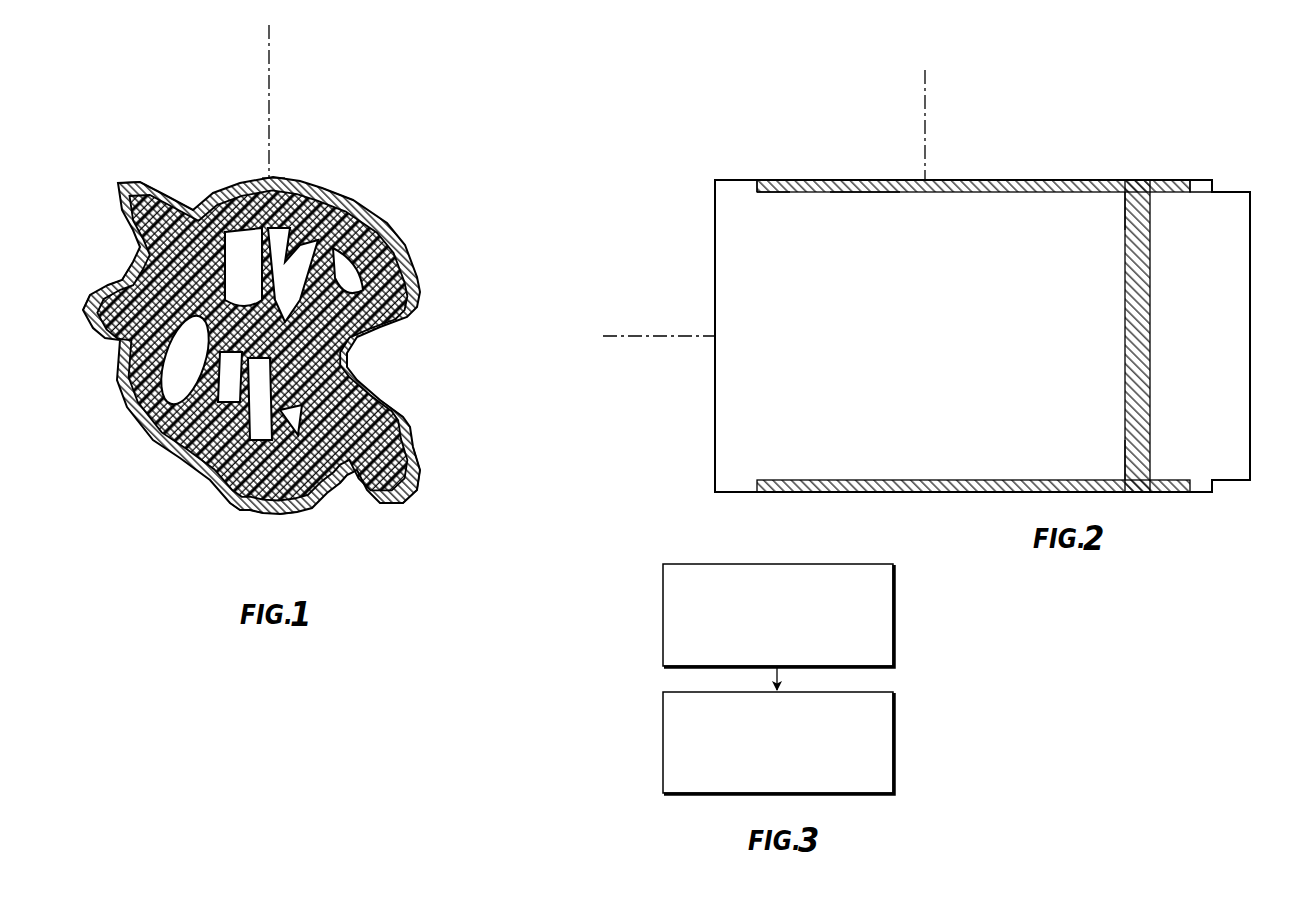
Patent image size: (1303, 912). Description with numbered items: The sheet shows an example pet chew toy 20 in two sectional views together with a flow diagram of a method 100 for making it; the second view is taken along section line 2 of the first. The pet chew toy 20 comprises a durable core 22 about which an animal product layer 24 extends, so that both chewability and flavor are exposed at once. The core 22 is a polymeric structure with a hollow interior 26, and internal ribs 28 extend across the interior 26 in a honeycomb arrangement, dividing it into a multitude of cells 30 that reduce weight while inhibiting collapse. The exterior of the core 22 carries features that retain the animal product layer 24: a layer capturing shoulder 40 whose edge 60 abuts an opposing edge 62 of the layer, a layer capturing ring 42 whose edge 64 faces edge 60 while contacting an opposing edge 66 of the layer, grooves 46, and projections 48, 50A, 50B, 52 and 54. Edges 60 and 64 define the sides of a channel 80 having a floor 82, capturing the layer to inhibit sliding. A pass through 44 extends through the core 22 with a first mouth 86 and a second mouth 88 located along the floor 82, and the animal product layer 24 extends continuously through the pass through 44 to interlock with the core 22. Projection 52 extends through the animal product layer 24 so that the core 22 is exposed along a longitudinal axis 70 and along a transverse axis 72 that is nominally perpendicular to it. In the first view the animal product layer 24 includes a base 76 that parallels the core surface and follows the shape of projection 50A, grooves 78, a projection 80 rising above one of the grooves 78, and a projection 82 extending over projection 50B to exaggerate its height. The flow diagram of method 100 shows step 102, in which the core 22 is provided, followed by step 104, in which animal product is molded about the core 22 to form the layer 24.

In FIG. 1, the pet chew toy 20 is at (137, 132).
In FIG. 2, the pet chew toy 20 is at (778, 105).
In FIG. 1, the core 22 is at (271, 497).
In FIG. 2, the core 22 is at (715, 396).
In FIG. 1, the animal product layer 24 is at (425, 295).
In FIG. 2, the animal product layer 24 is at (968, 180).
In FIG. 1, the hollow interior 26 is at (329, 190).
In FIG. 1, the ribs 28 is at (236, 440).
In FIG. 1, the cells 30 is at (185, 390).
In FIG. 2, the layer capturing shoulder 40 is at (722, 180).
In FIG. 2, the layer capturing ring 42 is at (1206, 180).
In FIG. 2, the pass through 44 is at (1147, 390).
In FIG. 1, the grooves 46 is at (378, 235).
In FIG. 1, the projection 48 is at (372, 462).
In FIG. 1, the projection 50A is at (115, 300).
In FIG. 1, the projection 50B is at (150, 195).
In FIG. 1, the projection 52 is at (284, 182).
In FIG. 1, the projection 54 is at (290, 512).
In FIG. 2, the edge 60 is at (757, 191).
In FIG. 2, the edge 62 is at (765, 182).
In FIG. 2, the edge 64 is at (1190, 190).
In FIG. 2, the edge 66 is at (1180, 182).
In FIG. 2, the longitudinal axis 70 is at (670, 336).
In FIG. 1, the transverse axis 72 is at (269, 57).
In FIG. 2, the transverse axis 72 is at (925, 97).
In FIG. 1, the base 76 is at (90, 330).
In FIG. 1, the grooves 78 is at (408, 423).
In FIG. 1, the projection 80 is at (412, 467).
In FIG. 2, the projection 80 is at (1061, 182).
In FIG. 1, the projection 82 is at (118, 196).
In FIG. 2, the projection 82 is at (865, 193).
In FIG. 2, the first mouth 86 is at (1124, 195).
In FIG. 2, the second mouth 88 is at (1124, 481).
In FIG. 3, the method 100 is at (622, 652).
In FIG. 3, the step of providing a core 102 is at (894, 599).
In FIG. 3, the step of molding animal product about core 104 is at (894, 720).
In FIG. 1, the section line 2- 2 is at (355, 228).